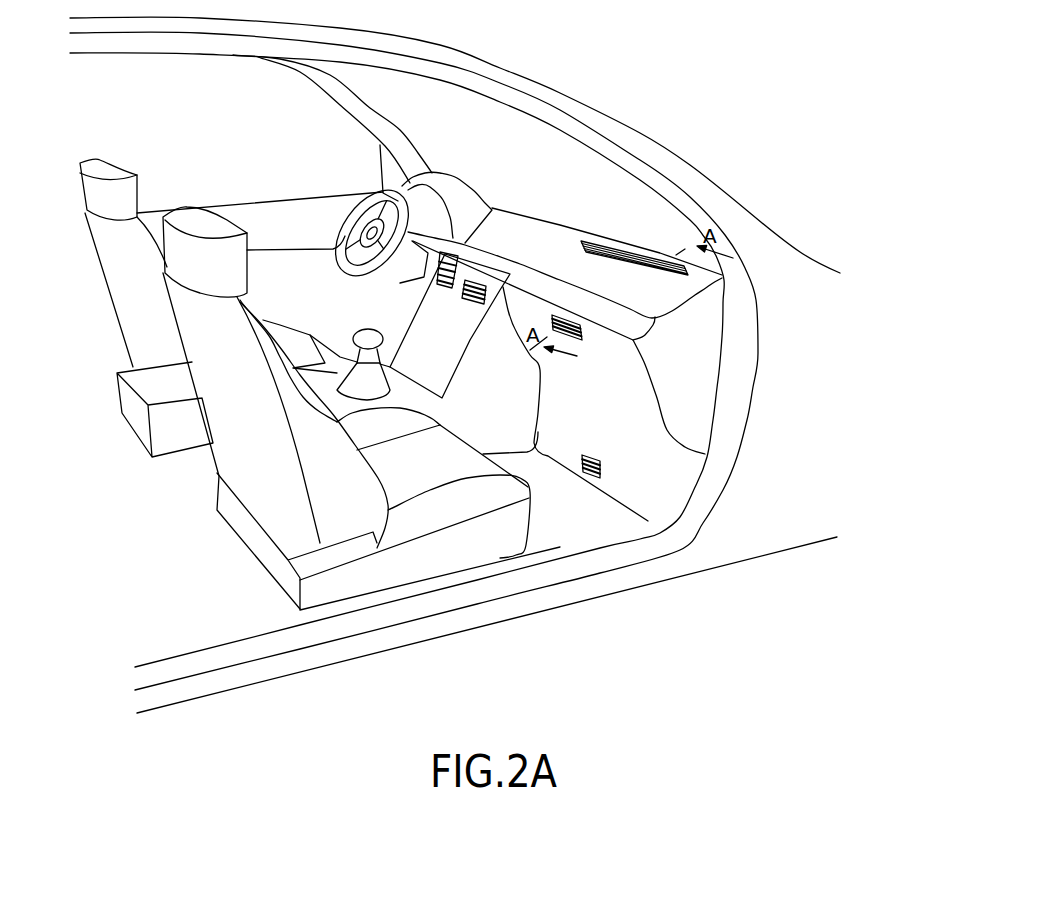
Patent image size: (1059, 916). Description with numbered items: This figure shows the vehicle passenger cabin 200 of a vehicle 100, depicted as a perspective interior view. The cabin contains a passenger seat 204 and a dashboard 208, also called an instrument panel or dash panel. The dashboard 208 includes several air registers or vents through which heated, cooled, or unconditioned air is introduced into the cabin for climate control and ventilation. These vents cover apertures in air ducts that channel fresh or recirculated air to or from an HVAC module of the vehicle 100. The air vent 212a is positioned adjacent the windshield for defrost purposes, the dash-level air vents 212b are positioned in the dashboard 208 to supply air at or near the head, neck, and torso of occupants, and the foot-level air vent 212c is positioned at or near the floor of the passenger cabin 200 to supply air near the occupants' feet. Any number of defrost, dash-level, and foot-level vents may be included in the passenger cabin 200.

The vehicle 100 is at (742, 88).
The vehicle passenger cabin 200 is at (420, 88).
The passenger seat 204 is at (487, 542).
The dashboard 208 is at (648, 405).
The air vent 212a is at (657, 257).
The air vent 212b is at (447, 277).
The air vent 212c is at (598, 460).